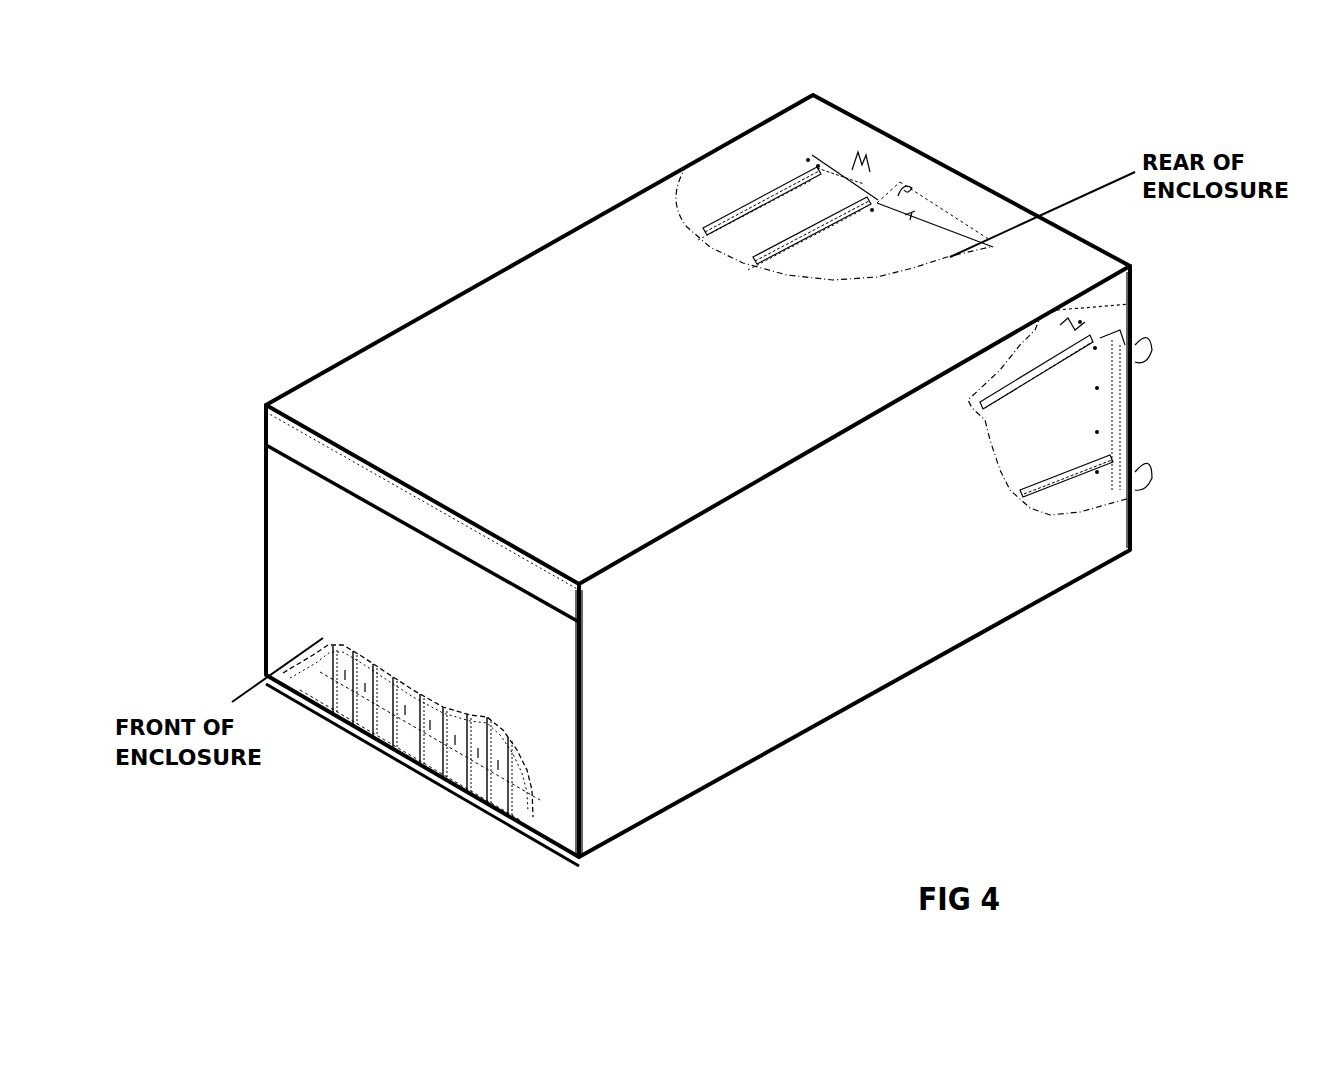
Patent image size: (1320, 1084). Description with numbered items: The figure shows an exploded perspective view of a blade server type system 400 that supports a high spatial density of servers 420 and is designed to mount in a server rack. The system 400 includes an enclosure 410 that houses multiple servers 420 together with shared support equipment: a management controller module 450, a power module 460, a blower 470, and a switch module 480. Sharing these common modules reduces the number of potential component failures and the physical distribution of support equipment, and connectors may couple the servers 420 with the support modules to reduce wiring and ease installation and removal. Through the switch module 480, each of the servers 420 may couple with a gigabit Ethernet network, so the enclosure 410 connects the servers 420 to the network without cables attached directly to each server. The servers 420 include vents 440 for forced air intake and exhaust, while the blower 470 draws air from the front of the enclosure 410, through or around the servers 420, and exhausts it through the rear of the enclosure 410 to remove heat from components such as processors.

The system 400 is at (353, 193).
The enclosure 410 is at (390, 395).
The servers 420 is at (455, 710).
The vents 440 is at (518, 785).
The management controller module 450 is at (783, 178).
The power module 460 is at (857, 182).
The blower 470 is at (883, 257).
The switch module 480 is at (1073, 423).